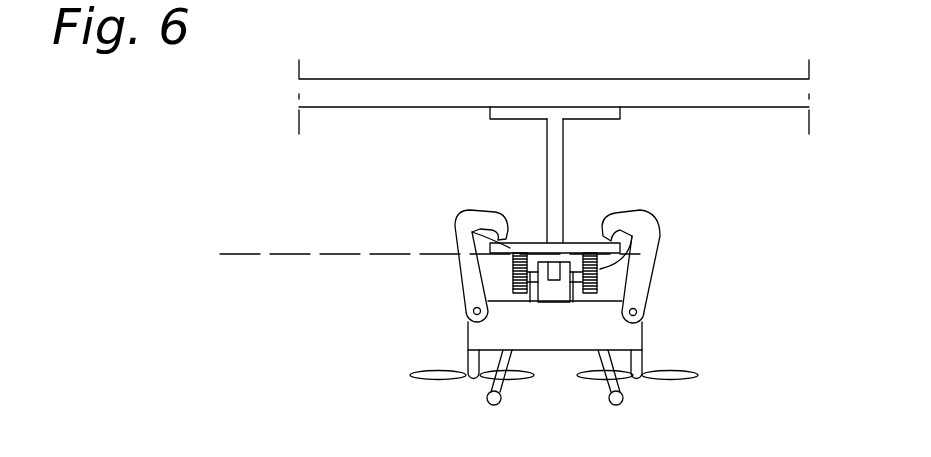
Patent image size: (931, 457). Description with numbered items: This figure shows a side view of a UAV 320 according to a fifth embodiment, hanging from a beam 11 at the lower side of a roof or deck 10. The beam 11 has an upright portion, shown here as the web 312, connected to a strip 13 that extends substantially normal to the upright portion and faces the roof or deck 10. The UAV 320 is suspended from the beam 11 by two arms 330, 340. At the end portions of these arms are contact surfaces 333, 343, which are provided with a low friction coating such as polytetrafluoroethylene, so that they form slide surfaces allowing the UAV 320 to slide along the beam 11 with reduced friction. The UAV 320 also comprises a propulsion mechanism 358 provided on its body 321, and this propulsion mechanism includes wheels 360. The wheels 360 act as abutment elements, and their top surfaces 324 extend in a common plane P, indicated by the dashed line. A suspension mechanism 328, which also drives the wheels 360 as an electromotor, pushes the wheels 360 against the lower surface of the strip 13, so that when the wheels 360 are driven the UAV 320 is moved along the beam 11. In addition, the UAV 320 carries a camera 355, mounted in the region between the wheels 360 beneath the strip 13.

The roof or deck 10 is at (760, 103).
The beam 11 is at (560, 139).
The rail web 312 is at (553, 140).
The strip 13 is at (533, 250).
The camera 355 is at (555, 273).
The propulsion mechanism 358 is at (606, 288).
The suspension mechanism 328 is at (558, 298).
The wheels 360 is at (545, 289).
The top surfaces of the wheels 324 is at (622, 264).
The arm 330 is at (437, 250).
The contact surface 333 is at (455, 222).
The arm 340 is at (664, 252).
The contact surface 343 is at (630, 211).
The UAV 320 is at (480, 379).
The body 321 is at (588, 333).
The common plane P is at (265, 255).